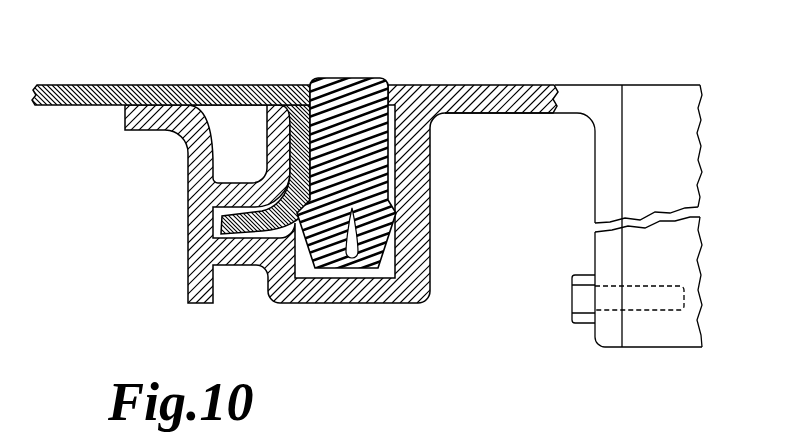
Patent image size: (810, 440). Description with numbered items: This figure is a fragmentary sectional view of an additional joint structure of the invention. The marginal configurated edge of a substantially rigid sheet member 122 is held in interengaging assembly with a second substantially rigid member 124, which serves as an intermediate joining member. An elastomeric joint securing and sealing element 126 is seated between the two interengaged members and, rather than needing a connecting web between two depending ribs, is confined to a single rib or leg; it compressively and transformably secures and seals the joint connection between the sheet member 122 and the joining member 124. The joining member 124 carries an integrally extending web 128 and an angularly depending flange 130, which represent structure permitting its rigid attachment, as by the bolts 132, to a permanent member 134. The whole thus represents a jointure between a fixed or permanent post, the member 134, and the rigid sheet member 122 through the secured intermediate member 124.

The substantially rigid sheet member 122 is at (112, 85).
The second substantially rigid member 124 is at (372, 303).
The elastomeric joint securing and sealing element 126 is at (361, 75).
The integrally extending web 128 is at (515, 113).
The angularly depending flange 130 is at (595, 197).
The bolts 132 is at (572, 298).
The permanent member 134 is at (674, 169).